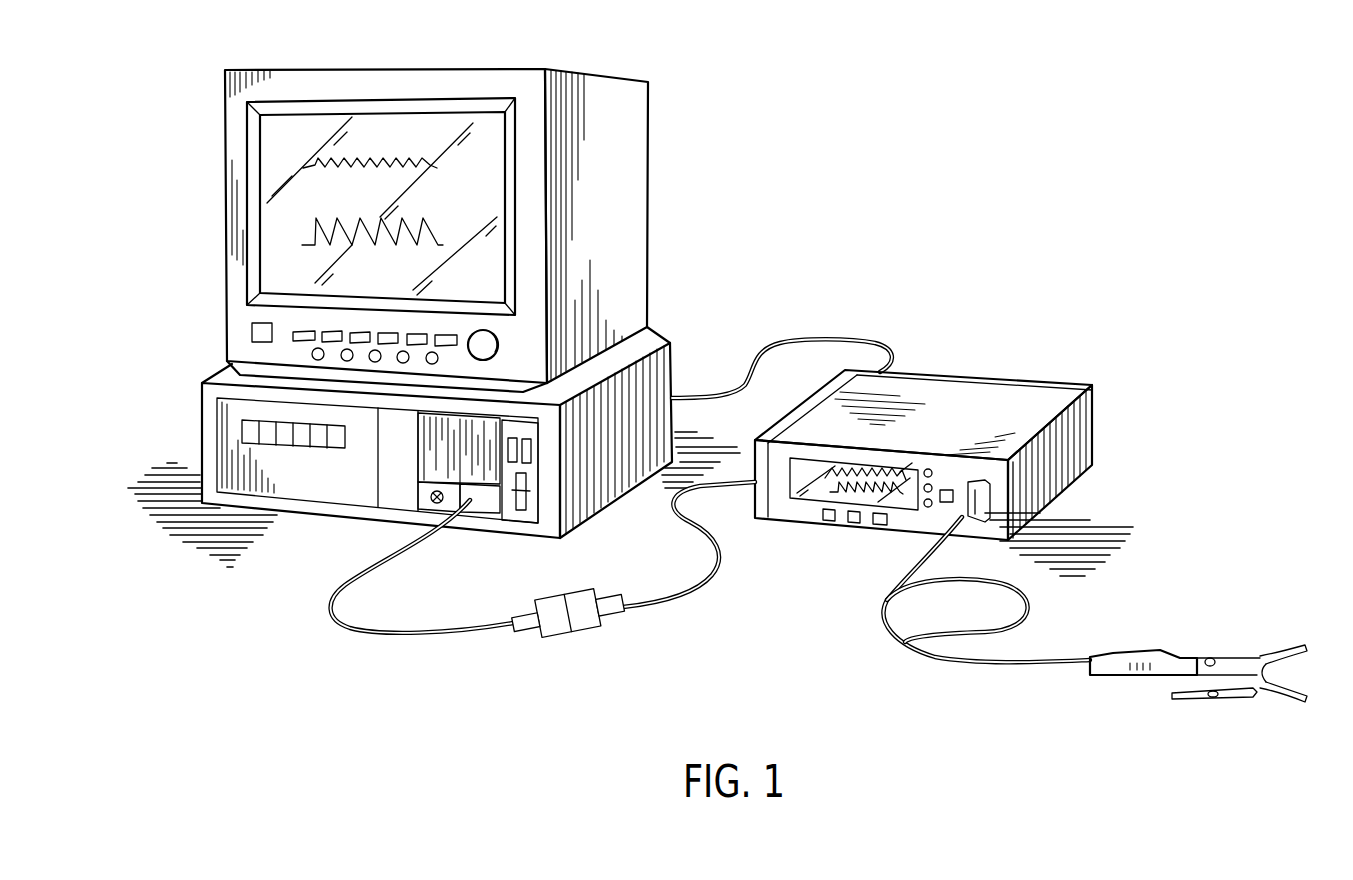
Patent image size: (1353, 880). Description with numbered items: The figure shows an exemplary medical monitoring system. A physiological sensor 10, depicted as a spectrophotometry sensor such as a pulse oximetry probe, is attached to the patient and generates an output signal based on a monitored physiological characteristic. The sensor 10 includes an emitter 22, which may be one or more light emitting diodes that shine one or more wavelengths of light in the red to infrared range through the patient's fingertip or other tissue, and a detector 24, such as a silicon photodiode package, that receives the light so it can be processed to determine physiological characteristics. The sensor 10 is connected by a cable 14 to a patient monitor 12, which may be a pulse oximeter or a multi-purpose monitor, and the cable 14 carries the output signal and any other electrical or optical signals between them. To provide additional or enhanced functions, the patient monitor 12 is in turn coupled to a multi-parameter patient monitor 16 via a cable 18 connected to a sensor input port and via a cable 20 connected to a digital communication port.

The physiological sensor 10 is at (1199, 673).
The patient monitor 12 is at (992, 377).
The cable 14 is at (927, 647).
The multi-parameter patient monitor 16 is at (598, 82).
The cable 18 is at (668, 606).
The cable 20 is at (830, 337).
The emitter 22 is at (1210, 656).
The detector 24 is at (1213, 700).